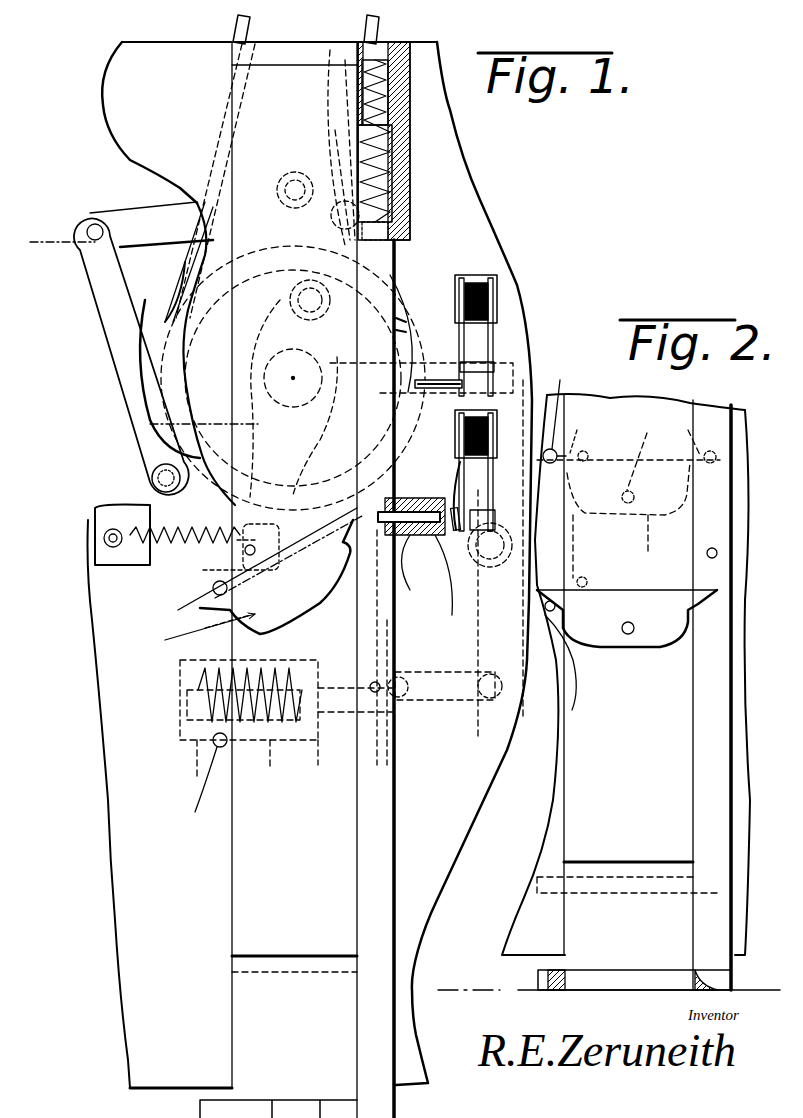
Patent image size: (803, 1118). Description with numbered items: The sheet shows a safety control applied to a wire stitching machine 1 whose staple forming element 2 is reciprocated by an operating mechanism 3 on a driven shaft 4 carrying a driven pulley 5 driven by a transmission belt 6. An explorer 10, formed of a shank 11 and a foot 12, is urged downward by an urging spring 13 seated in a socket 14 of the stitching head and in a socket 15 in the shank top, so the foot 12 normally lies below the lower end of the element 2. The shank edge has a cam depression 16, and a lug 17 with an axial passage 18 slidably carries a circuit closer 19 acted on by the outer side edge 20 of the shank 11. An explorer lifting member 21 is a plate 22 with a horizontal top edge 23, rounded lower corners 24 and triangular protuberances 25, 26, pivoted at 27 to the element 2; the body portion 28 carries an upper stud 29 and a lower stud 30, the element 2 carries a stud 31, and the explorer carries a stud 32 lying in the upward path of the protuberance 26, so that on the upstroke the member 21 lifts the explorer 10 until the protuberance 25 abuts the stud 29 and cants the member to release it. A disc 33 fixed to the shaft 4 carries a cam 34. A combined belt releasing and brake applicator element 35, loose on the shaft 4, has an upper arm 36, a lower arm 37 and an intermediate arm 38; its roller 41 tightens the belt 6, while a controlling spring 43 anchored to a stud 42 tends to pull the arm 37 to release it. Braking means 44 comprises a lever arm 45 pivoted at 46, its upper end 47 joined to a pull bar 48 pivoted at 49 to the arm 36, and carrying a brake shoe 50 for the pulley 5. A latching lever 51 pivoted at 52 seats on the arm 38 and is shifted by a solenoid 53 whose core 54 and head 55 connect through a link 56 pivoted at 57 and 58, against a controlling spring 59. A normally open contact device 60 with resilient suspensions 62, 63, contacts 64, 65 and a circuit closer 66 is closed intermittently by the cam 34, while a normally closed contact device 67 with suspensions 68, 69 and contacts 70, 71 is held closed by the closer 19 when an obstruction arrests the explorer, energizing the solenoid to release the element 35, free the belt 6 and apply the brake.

In FIG. 1, the wire stitching machine 1 is at (450, 126).
In FIG. 1, the staple forming element 2 is at (262, 76).
In FIG. 2, the staple forming element 2 is at (672, 793).
In FIG. 1, the operating mechanism 3 is at (280, 178).
In FIG. 1, the driven shaft 4 is at (283, 415).
In FIG. 1, the driven pulley 5 is at (160, 392).
In FIG. 1, the transmission belt 6 is at (200, 242).
In FIG. 1, the explorer 10 is at (400, 800).
In FIG. 2, the explorer 10 is at (720, 722).
In FIG. 1, the shank 11 is at (383, 874).
In FIG. 2, the shank 11 is at (718, 665).
In FIG. 2, the foot 12 is at (633, 897).
In FIG. 1, the urging spring 13 is at (385, 60).
In FIG. 1, the socket 14 is at (385, 95).
In FIG. 1, the socket 15 is at (392, 228).
In FIG. 1, the depression 16 is at (410, 588).
In FIG. 1, the lug 17 is at (418, 505).
In FIG. 1, the axial passage 18 is at (422, 562).
In FIG. 1, the circuit closer 19 is at (471, 605).
In FIG. 1, the outer side edge 20 is at (398, 640).
In FIG. 1, the explorer lifting member 21 is at (197, 635).
In FIG. 2, the explorer lifting member 21 is at (615, 570).
In FIG. 2, the plate 22 is at (650, 655).
In FIG. 1, the horizontal top edge 23 is at (292, 555).
In FIG. 2, the horizontal top edge 23 is at (640, 592).
In FIG. 2, the rounded lower corners 24 is at (590, 700).
In FIG. 2, the protuberance 25 is at (628, 499).
In FIG. 2, the protuberance 26 is at (708, 450).
In FIG. 1, the pivot 27 is at (110, 793).
In FIG. 2, the pivot 27 is at (640, 460).
In FIG. 1, the body portion 28 is at (179, 873).
In FIG. 2, the body portion 28 is at (720, 597).
In FIG. 1, the upper stud 29 is at (195, 627).
In FIG. 2, the upper stud 29 is at (565, 405).
In FIG. 1, the lower stud 30 is at (202, 782).
In FIG. 2, the lower stud 30 is at (565, 655).
In FIG. 1, the stud 31 is at (230, 551).
In FIG. 2, the stud 31 is at (590, 448).
In FIG. 1, the stud 32 is at (376, 647).
In FIG. 2, the stud 32 is at (725, 435).
In FIG. 1, the disc 33 is at (405, 290).
In FIG. 1, the cam 34 is at (372, 322).
In FIG. 1, the combined belt releasing and brake applicator element 35 is at (305, 450).
In FIG. 1, the upper arm 36 is at (290, 305).
In FIG. 1, the lower arm 37 is at (232, 420).
In FIG. 1, the intermediate arm 38 is at (384, 360).
In FIG. 1, the belt tightening and releasing roller 41 is at (392, 190).
In FIG. 1, the stud 42 is at (108, 540).
In FIG. 1, the controlling spring 43 is at (212, 589).
In FIG. 1, the braking means 44 is at (102, 343).
In FIG. 1, the lever arm 45 is at (138, 420).
In FIG. 1, the pivot 46 is at (152, 477).
In FIG. 1, the upper end 47 is at (88, 247).
In FIG. 1, the pull bar 48 is at (138, 217).
In FIG. 1, the pivot 49 is at (322, 170).
In FIG. 1, the brake shoe 50 is at (160, 316).
In FIG. 1, the latching lever 51 is at (490, 565).
In FIG. 1, the pivot 52 is at (505, 520).
In FIG. 1, the solenoid 53 is at (272, 742).
In FIG. 1, the core 54 is at (327, 759).
In FIG. 1, the head 55 is at (420, 670).
In FIG. 1, the link 56 is at (447, 710).
In FIG. 1, the pivot 57 is at (492, 700).
In FIG. 1, the pivot 58 is at (421, 680).
In FIG. 1, the controlling spring 59 is at (545, 715).
In FIG. 1, the contact device 60 is at (495, 333).
In FIG. 1, the resilient suspension 62 is at (462, 337).
In FIG. 1, the resilient suspension 63 is at (473, 357).
In FIG. 1, the contact 64 is at (488, 362).
In FIG. 1, the contact 65 is at (465, 370).
In FIG. 1, the circuit closer 66 is at (438, 397).
In FIG. 1, the contact device 67 is at (495, 466).
In FIG. 1, the resilient suspension 68 is at (460, 466).
In FIG. 1, the resilient suspension 69 is at (493, 482).
In FIG. 1, the contact 70 is at (457, 545).
In FIG. 1, the contact 71 is at (465, 505).